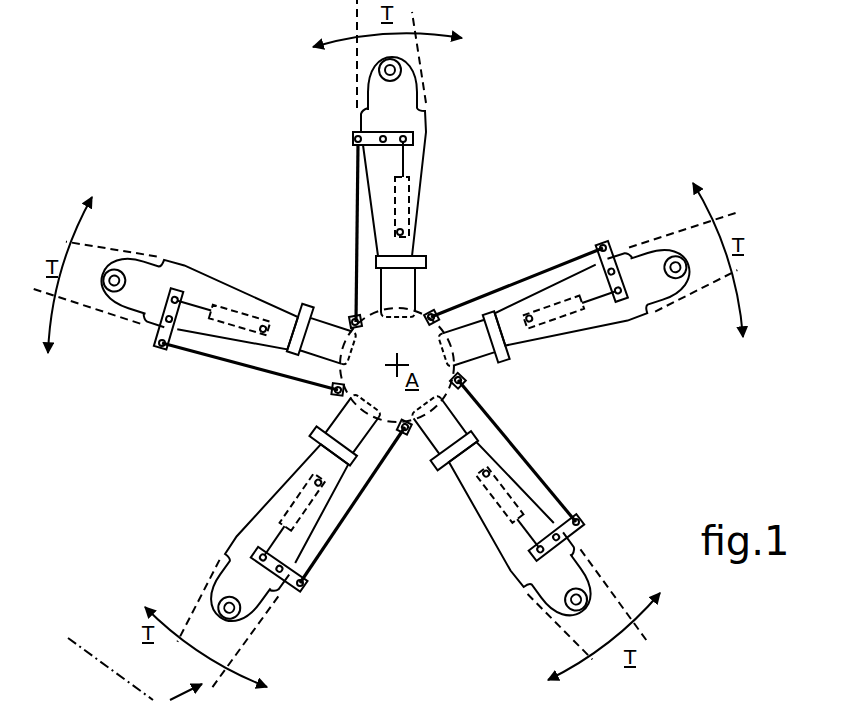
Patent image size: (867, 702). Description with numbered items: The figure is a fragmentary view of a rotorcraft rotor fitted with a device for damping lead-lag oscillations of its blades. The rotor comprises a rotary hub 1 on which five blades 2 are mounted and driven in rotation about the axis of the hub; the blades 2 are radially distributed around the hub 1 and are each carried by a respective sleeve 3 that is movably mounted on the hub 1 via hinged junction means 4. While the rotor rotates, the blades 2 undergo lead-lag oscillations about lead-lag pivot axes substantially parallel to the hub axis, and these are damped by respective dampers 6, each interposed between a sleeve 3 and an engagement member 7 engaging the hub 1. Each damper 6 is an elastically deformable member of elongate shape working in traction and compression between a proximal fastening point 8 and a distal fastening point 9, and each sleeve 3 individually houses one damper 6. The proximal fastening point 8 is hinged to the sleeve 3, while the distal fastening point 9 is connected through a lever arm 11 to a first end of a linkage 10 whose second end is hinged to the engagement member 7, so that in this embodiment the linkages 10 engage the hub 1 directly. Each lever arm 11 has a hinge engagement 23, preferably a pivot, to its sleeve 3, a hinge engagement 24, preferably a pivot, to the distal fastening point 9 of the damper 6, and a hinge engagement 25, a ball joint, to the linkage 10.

The rotary hub 1 is at (399, 420).
The blade 2 is at (418, 50).
The sleeve 3 is at (427, 170).
The hinged junction means 4 is at (416, 290).
The damper 6 is at (410, 196).
The engagement member 7 is at (358, 327).
The proximal fastening point 8 is at (404, 234).
The distal fastening point 9 is at (414, 134).
The hinge engagement of the lever arm to the distal fastening point 24 is at (436, 357).
The linkage 10 is at (356, 236).
The lever arm 11 is at (353, 133).
The hinge engagement of the lever arm to the sleeve 23 is at (383, 135).
The hinge engagement of the lever arm to the linkage 25 is at (356, 141).